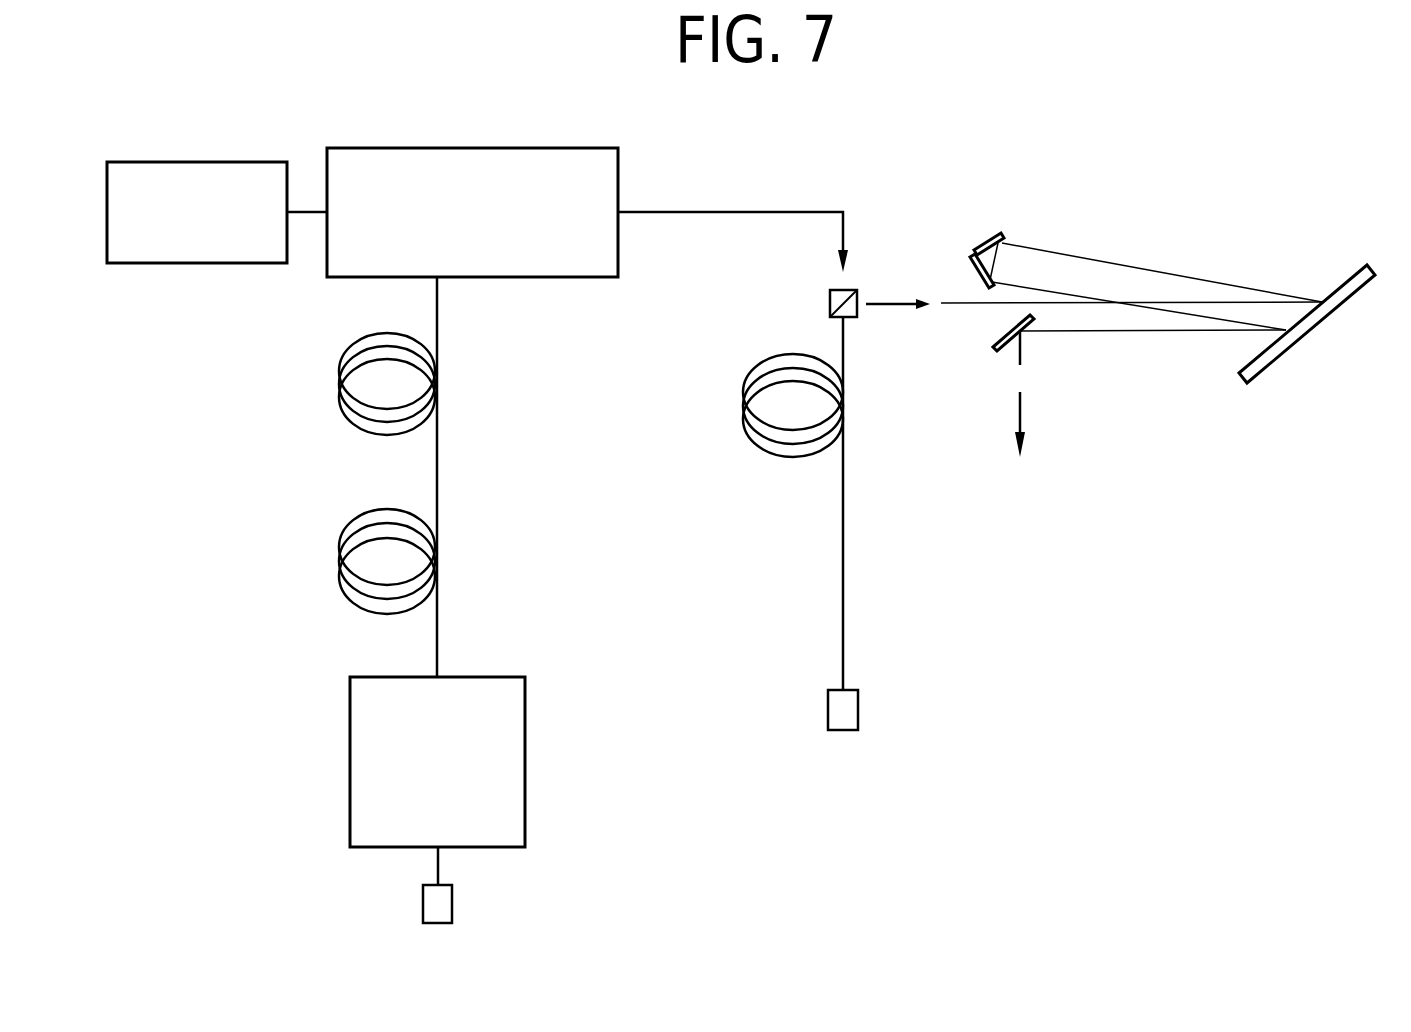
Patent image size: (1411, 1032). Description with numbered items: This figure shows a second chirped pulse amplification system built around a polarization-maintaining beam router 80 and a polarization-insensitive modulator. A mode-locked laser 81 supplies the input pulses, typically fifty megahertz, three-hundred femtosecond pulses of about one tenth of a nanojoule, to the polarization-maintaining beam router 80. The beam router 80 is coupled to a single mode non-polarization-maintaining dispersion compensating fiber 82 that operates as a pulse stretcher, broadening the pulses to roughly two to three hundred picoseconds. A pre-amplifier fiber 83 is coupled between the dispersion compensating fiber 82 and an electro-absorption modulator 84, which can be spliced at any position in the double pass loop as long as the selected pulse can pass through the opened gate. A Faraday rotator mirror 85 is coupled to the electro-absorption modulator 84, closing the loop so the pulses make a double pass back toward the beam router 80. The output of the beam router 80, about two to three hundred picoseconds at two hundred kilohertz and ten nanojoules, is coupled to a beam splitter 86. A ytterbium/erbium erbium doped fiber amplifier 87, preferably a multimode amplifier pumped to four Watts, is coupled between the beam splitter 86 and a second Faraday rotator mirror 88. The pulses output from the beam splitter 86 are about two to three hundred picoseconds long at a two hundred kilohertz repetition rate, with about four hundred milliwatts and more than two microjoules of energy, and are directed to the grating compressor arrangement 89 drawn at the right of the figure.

The polarization-maintaining beam router 80 is at (526, 148).
The mode-locked laser 81 is at (257, 162).
The non-polarization-maintaining dispersion compensating fiber 82 is at (339, 383).
The pre-amplifier fiber 83 is at (339, 561).
The electro-absorption modulator 84 is at (350, 725).
The Faraday rotator mirror 85 is at (423, 905).
The beam splitter 86 is at (829, 303).
The ytterbium/erbium erbium doped fiber amplifier 87 is at (846, 410).
The Faraday rotator mirror 88 is at (858, 706).
The grating compressor assembly 89 is at (1398, 206).